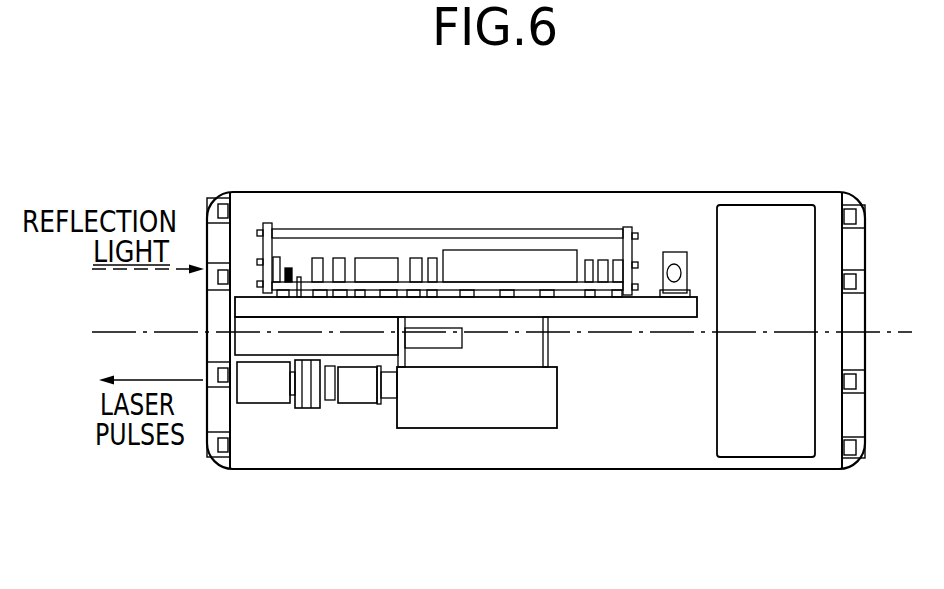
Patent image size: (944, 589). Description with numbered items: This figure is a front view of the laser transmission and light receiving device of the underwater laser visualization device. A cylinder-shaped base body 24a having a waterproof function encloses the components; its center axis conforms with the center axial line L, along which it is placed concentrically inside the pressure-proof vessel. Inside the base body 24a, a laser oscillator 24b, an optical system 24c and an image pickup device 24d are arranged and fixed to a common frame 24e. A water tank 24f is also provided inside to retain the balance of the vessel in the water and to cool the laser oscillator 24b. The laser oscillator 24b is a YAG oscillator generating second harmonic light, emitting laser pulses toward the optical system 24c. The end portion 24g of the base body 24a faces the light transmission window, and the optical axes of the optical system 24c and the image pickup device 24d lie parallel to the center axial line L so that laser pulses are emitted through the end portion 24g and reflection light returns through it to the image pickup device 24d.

The cylinder-shaped base body 24a is at (548, 192).
The laser oscillator 24b is at (557, 408).
The optical system 24c is at (395, 417).
The image pickup device 24d is at (452, 207).
The common frame 24e is at (632, 307).
The water tank 24f is at (782, 440).
The end portion 24g is at (207, 243).
The center axial line L is at (900, 331).